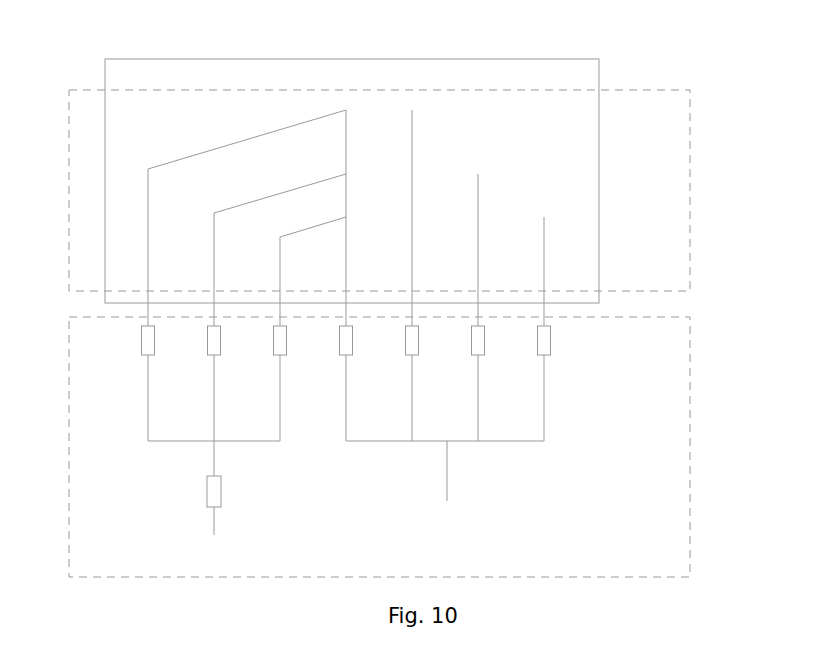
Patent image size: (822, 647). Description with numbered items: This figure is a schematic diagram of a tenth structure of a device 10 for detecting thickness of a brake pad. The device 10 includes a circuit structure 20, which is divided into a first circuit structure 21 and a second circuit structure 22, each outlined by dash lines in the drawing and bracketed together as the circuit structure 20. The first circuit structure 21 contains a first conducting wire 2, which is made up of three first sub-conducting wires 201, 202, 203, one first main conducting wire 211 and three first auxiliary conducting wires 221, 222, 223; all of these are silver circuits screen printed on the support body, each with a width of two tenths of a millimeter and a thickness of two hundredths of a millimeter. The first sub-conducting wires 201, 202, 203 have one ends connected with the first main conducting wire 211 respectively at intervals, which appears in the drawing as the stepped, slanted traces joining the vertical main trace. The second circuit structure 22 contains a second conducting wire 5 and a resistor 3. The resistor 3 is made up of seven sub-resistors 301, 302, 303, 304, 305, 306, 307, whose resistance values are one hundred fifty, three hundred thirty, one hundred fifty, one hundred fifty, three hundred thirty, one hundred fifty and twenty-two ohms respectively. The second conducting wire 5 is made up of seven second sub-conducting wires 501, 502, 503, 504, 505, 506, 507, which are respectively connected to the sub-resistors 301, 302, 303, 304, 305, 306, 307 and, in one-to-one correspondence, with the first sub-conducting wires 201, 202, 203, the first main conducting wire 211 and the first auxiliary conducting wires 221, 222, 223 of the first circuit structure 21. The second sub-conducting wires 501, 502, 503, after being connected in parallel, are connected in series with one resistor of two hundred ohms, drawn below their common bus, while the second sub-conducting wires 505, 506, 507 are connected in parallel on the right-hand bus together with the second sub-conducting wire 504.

The device for detecting thickness of a brake pad 10 is at (336, 36).
The circuit structure 20 is at (438, 333).
The first circuit structure 21 is at (690, 226).
The second circuit structure 22 is at (410, 447).
The first conducting wire 2 is at (314, 218).
The resistor 3 is at (317, 341).
The second conducting wire 5 is at (314, 445).
The first sub-conducting wire 201 is at (151, 271).
The first sub-conducting wire 202 is at (217, 271).
The first sub-conducting wire 203 is at (283, 271).
The first main conducting wire 211 is at (349, 271).
The first auxiliary conducting wire 221 is at (415, 271).
The first auxiliary conducting wire 222 is at (481, 271).
The first auxiliary conducting wire 223 is at (547, 271).
The sub-resistor 301 is at (156, 344).
The sub-resistor 302 is at (222, 344).
The sub-resistor 303 is at (288, 344).
The sub-resistor 304 is at (354, 344).
The sub-resistor 305 is at (420, 344).
The sub-resistor 306 is at (486, 344).
The sub-resistor 307 is at (552, 344).
The second sub-conducting wire 501 is at (151, 408).
The second sub-conducting wire 502 is at (217, 408).
The second sub-conducting wire 503 is at (283, 408).
The second sub-conducting wire 504 is at (349, 408).
The second sub-conducting wire 505 is at (415, 408).
The second sub-conducting wire 506 is at (481, 408).
The second sub-conducting wire 507 is at (547, 408).